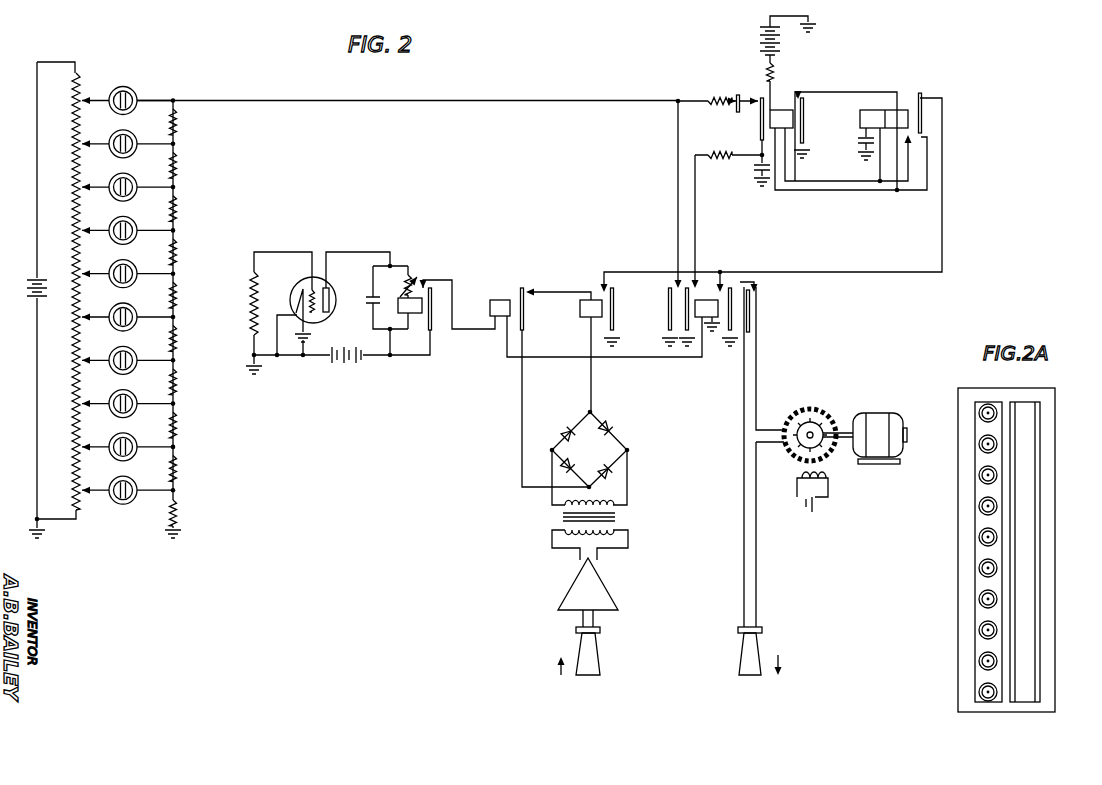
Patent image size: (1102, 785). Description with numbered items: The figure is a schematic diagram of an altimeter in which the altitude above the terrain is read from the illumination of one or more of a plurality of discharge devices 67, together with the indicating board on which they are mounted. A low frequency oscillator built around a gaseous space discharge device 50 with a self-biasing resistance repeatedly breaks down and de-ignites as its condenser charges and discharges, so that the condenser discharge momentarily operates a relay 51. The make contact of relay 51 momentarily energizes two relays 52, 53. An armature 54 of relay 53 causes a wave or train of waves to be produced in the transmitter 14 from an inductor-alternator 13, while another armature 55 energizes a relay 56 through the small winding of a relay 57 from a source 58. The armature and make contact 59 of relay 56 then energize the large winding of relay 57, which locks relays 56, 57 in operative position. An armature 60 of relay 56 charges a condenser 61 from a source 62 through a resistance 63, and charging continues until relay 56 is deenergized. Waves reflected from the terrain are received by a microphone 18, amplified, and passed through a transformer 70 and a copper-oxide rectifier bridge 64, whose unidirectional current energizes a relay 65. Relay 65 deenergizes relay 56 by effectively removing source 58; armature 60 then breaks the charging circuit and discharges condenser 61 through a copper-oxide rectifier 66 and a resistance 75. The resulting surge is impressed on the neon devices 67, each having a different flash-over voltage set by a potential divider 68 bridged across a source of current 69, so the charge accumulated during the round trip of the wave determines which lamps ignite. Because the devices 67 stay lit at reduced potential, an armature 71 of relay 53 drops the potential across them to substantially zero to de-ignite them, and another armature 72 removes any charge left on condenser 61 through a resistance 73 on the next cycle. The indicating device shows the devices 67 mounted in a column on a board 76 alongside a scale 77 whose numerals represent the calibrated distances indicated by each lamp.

In FIG. 2, the inductor-alternator 13 is at (816, 423).
In FIG. 2, the transmitter 14 is at (739, 661).
In FIG. 2, the microphone 18 is at (600, 660).
In FIG. 2, the gaseous space discharge device 50 is at (302, 287).
In FIG. 2, the relay 51 is at (413, 313).
In FIG. 2, the relay 52 is at (490, 307).
In FIG. 2, the relay 53 is at (701, 330).
In FIG. 2, the armature 54 is at (758, 290).
In FIG. 2, the armature 55 is at (730, 288).
In FIG. 2, the relay 56 is at (795, 122).
In FIG. 2, the relay 57 is at (885, 110).
In FIG. 2, the source 58 is at (858, 144).
In FIG. 2, the armature and make contact 59 is at (805, 107).
In FIG. 2, the armature 60 is at (762, 99).
In FIG. 2, the condenser 61 is at (754, 175).
In FIG. 2, the source 62 is at (782, 37).
In FIG. 2, the resistance 63 is at (780, 70).
In FIG. 2, the copper-oxide rectifier bridge 64 is at (590, 450).
In FIG. 2, the relay 65 is at (580, 307).
In FIG. 2, the copper-oxide rectifier 66 is at (739, 95).
In FIG. 2, the gaseous space discharge devices 67 is at (126, 88).
In FIG. 2A, the gaseous space discharge devices 67 is at (981, 475).
In FIG. 2, the potential divider 68 is at (90, 73).
In FIG. 2, the source of current 69 is at (30, 288).
In FIG. 2, the transformer 70 is at (617, 522).
In FIG. 2, the armature 71 is at (670, 286).
In FIG. 2, the armature 72 is at (690, 286).
In FIG. 2, the resistance 73 is at (718, 153).
In FIG. 2, the resistance 75 is at (718, 100).
In FIG. 2A, the board 76 is at (1055, 452).
In FIG. 2A, the scale 77 is at (1020, 404).